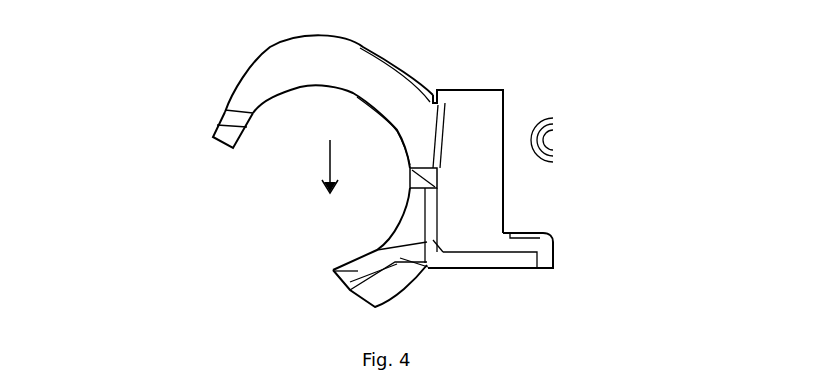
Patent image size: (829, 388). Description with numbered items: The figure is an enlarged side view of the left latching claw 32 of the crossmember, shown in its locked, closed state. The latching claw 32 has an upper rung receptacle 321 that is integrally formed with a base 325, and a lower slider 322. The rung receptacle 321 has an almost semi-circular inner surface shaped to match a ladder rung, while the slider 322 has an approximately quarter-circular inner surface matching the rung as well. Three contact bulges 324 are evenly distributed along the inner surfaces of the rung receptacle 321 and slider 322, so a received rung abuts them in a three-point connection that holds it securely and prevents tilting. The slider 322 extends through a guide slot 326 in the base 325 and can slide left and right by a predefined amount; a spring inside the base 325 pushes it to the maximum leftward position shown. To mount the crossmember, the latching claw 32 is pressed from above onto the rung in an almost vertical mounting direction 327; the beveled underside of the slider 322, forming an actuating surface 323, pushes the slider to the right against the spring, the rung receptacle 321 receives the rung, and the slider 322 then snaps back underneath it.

The latching claw 32 is at (195, 117).
The rung receptacle 321 is at (292, 70).
The slider 322 is at (337, 270).
The actuating surface 323 is at (350, 290).
The contact bulges 324 is at (225, 110).
The base 325 is at (505, 104).
The guide slot 326 is at (513, 258).
The mounting direction 327 is at (323, 165).